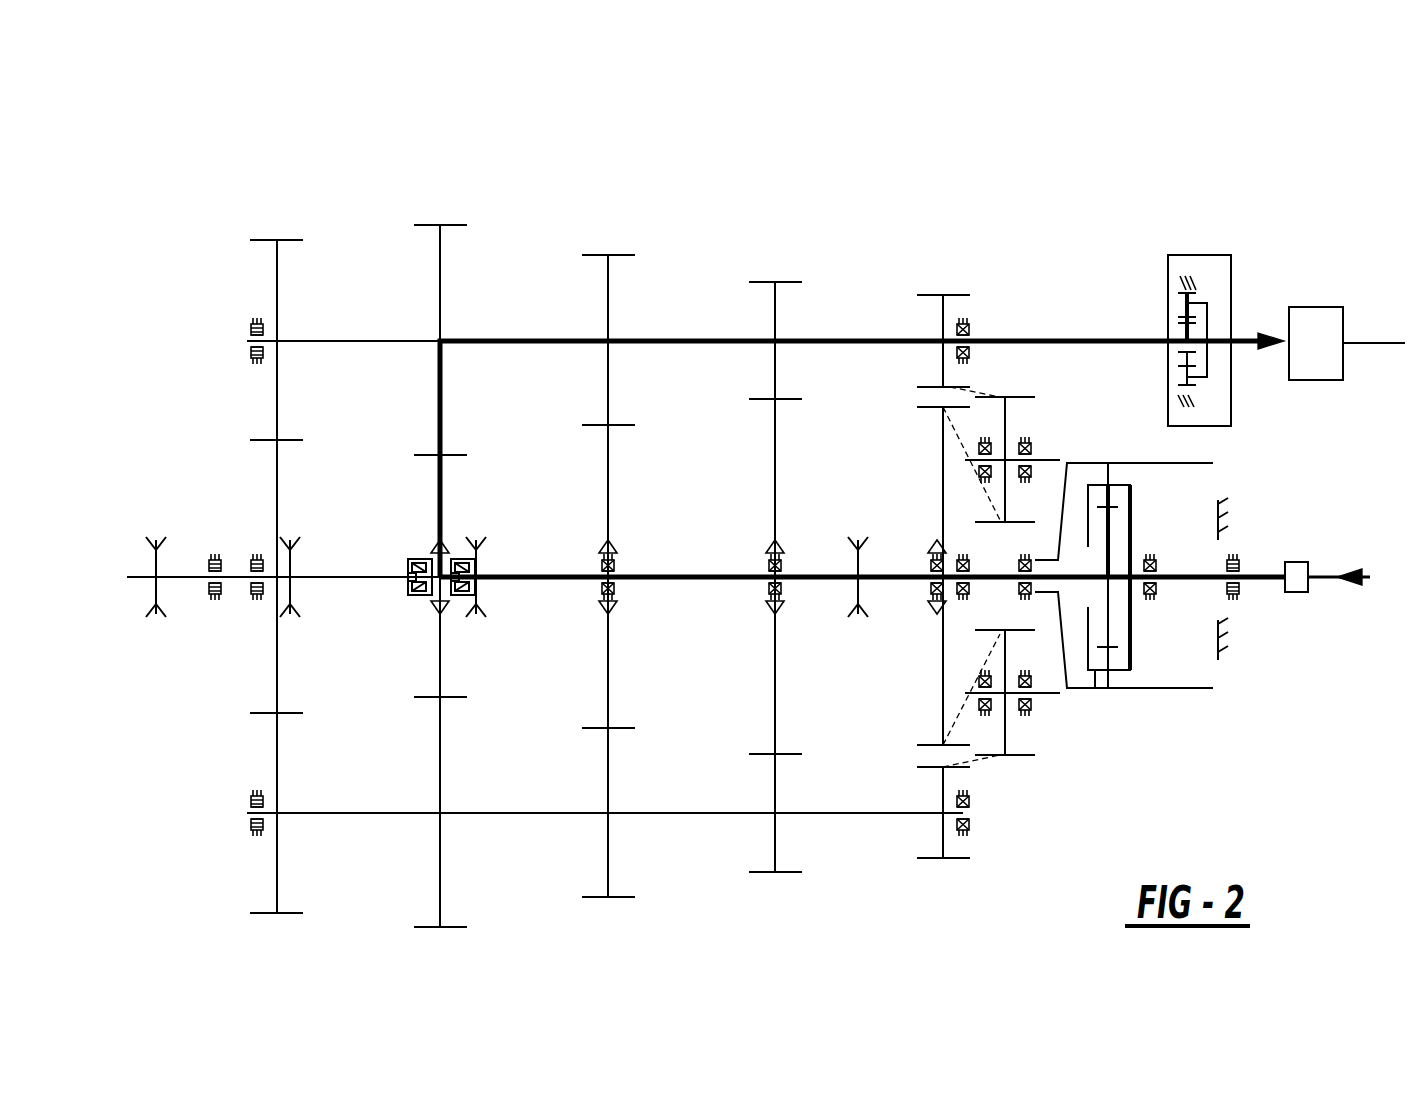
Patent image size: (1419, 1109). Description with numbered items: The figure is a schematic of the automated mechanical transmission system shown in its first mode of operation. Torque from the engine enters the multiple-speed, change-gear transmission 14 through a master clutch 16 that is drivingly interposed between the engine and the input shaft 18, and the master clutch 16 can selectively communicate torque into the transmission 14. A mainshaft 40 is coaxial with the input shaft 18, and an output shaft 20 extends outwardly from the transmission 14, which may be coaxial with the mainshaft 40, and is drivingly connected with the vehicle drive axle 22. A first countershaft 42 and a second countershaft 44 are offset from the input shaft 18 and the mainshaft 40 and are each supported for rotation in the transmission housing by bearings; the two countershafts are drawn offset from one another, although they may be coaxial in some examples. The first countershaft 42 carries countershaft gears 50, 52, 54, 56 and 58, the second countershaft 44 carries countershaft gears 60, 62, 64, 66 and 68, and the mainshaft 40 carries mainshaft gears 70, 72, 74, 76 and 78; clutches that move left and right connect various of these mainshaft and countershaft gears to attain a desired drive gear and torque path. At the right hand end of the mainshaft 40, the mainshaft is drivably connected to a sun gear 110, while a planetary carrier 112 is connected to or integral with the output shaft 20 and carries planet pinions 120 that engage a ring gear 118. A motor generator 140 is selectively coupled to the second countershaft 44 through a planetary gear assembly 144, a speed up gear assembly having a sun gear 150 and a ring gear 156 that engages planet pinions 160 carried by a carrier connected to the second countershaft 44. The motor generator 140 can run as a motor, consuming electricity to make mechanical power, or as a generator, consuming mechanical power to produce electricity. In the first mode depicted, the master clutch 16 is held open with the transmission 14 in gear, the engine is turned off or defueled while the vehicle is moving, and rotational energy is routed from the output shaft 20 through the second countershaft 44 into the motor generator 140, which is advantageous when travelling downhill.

The transmission 14 is at (662, 142).
The master clutch 16 is at (156, 600).
The input shaft 18 is at (182, 577).
The output shaft 20 is at (1265, 577).
The drive axle 22 is at (1305, 560).
The mainshaft 40 is at (545, 577).
The first countershaft 42 is at (510, 813).
The second countershaft 44 is at (527, 341).
The countershaft gear 50 is at (277, 868).
The countershaft gear 52 is at (440, 840).
The countershaft gear 54 is at (608, 860).
The countershaft gear 56 is at (775, 785).
The countershaft gear 58 is at (943, 836).
The countershaft gear 60 is at (277, 290).
The countershaft gear 62 is at (440, 280).
The countershaft gear 64 is at (608, 300).
The countershaft gear 66 is at (775, 312).
The countershaft gear 68 is at (943, 322).
The mainshaft gear 70 is at (277, 495).
The mainshaft gear 72 is at (440, 495).
The mainshaft gear 74 is at (608, 466).
The mainshaft gear 76 is at (775, 488).
The mainshaft gear 78 is at (943, 502).
The sun gear 110 is at (1108, 608).
The planetary carrier 112 is at (1095, 688).
The ring gear 118 is at (1163, 688).
The planet pinions 120 is at (1108, 472).
The motor generator 140 is at (1312, 307).
The planetary gear assembly 144 is at (1177, 255).
The sun gear 150 is at (1187, 352).
The ring gear 156 is at (1192, 280).
The planet pinions 160 is at (1187, 303).